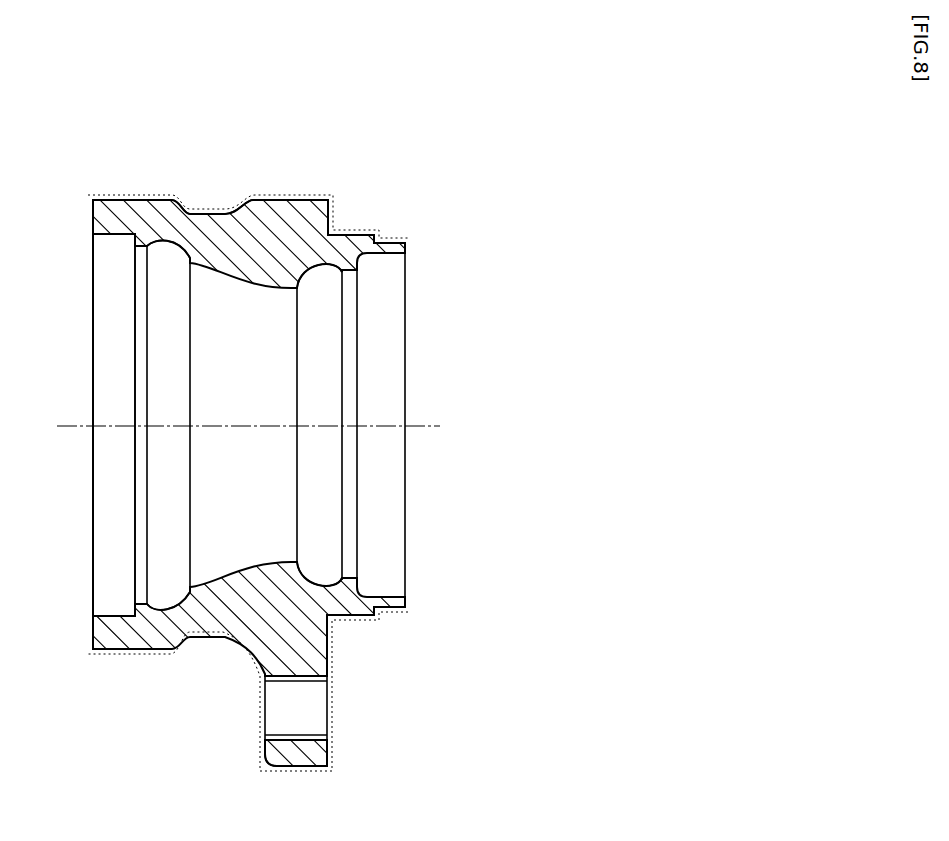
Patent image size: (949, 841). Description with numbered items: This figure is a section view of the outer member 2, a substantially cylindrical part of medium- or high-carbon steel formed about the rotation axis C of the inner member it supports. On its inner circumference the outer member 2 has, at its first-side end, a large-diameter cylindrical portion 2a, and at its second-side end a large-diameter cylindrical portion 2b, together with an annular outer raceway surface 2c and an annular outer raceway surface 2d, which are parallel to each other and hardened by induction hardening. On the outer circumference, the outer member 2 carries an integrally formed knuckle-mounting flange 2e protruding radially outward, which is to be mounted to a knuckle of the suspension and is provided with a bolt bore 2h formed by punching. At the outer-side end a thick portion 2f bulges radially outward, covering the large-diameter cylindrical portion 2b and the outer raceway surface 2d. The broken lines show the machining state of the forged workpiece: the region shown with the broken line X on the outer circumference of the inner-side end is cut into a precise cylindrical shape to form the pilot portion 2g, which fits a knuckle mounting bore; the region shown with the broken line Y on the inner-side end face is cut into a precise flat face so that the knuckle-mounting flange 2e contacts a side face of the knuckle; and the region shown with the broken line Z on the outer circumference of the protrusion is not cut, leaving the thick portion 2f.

The outer member 2 is at (326, 145).
The large-diameter cylindrical portion 2a is at (389, 258).
The large-diameter cylindrical portion 2b is at (113, 238).
The outer raceway surface 2c is at (323, 586).
The outer raceway surface 2d is at (167, 610).
The knuckle-mounting flange 2e is at (295, 768).
The thick portion 2f is at (152, 197).
The pilot portion 2g is at (345, 616).
The bolt bore 2h is at (280, 737).
The broken line X is at (370, 230).
The broken line Y is at (340, 196).
The broken line Z is at (120, 192).
The rotation axis C is at (260, 426).